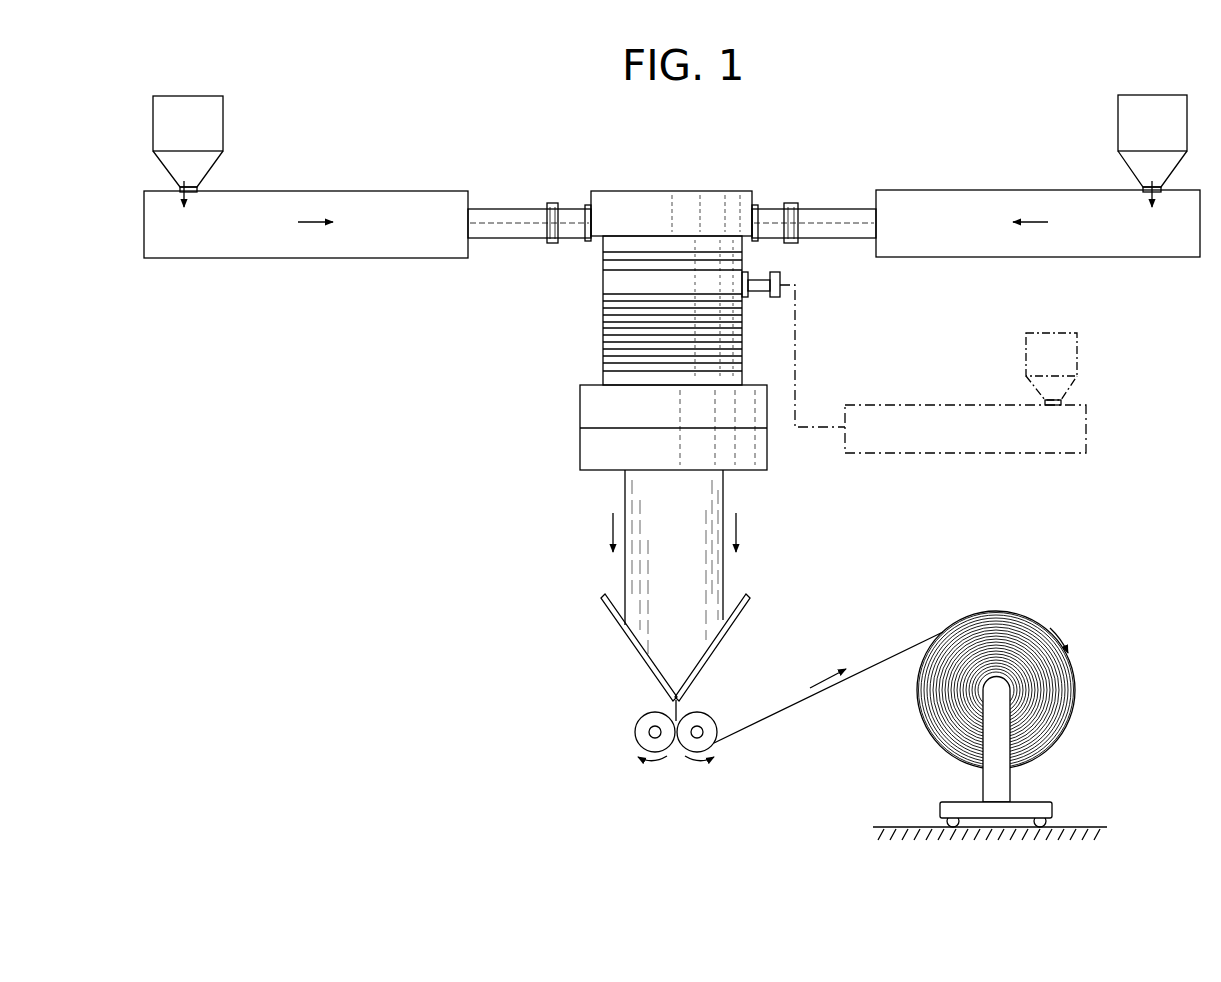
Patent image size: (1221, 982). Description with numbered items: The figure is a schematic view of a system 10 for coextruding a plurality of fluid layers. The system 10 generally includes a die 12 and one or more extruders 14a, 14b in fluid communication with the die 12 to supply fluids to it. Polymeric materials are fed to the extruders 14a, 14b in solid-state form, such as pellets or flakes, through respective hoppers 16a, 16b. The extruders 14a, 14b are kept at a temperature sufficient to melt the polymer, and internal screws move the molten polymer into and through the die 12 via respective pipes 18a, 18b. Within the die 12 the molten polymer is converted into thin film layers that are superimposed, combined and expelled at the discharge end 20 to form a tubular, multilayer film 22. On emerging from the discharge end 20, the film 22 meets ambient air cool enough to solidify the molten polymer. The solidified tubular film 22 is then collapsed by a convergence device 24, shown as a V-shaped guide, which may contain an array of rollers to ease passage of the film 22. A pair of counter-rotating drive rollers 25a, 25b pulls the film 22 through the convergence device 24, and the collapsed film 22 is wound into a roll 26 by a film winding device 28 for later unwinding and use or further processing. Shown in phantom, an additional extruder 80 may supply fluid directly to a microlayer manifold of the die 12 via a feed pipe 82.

The system 10 is at (912, 124).
The die 12 is at (674, 188).
The extruder 14a is at (338, 200).
The extruder 14b is at (968, 196).
The hopper 16a is at (210, 121).
The hopper 16b is at (1130, 114).
The pipe 18a is at (571, 207).
The pipe 18b is at (772, 200).
The discharge end 20 is at (597, 472).
The tubular multilayer film 22 is at (723, 577).
The convergence device 24 is at (718, 648).
The counter-rotating drive roller 25a is at (636, 722).
The counter-rotating drive roller 25b is at (714, 718).
The roll 26 is at (1016, 616).
The film winding device 28 is at (1003, 783).
The additional extruder 80 is at (1086, 425).
The feed pipe 82 is at (795, 320).